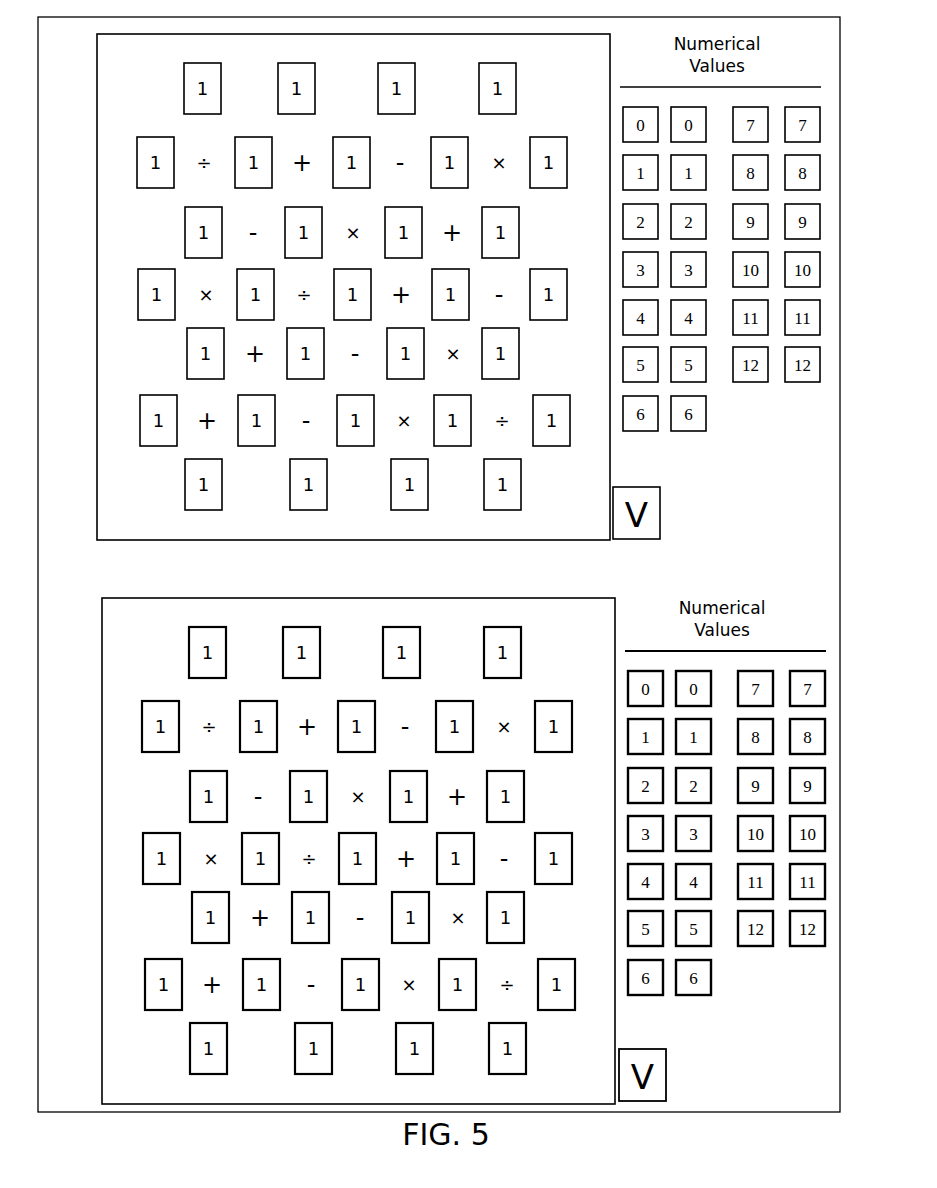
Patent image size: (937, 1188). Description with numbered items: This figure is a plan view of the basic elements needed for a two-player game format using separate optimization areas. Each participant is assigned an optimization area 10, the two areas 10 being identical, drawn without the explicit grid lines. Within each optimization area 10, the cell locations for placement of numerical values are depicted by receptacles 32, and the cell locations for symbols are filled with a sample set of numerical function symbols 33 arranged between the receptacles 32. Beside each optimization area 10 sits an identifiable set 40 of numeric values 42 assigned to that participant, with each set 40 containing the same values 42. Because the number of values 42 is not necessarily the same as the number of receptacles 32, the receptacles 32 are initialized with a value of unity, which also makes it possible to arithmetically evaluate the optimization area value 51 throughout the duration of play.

The optimization area 10 is at (98, 313).
The receptacles 32 is at (507, 86).
The numerical function symbols 33 is at (418, 432).
The identifiable set of numeric values 40 is at (775, 76).
The numeric values 42 is at (808, 392).
The optimization area value 51 is at (665, 523).